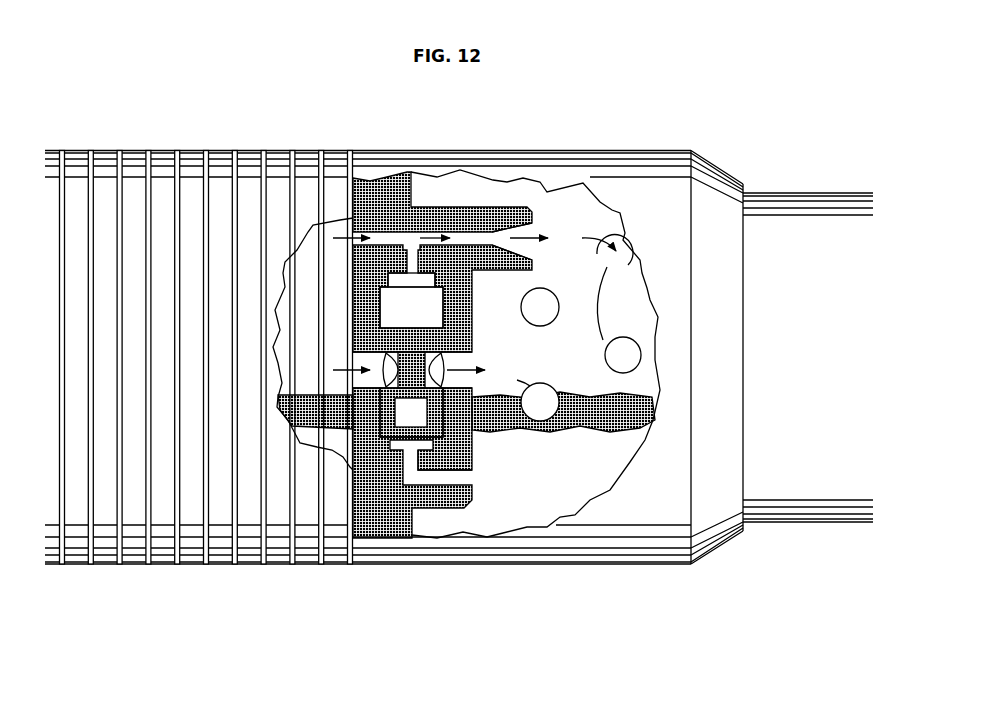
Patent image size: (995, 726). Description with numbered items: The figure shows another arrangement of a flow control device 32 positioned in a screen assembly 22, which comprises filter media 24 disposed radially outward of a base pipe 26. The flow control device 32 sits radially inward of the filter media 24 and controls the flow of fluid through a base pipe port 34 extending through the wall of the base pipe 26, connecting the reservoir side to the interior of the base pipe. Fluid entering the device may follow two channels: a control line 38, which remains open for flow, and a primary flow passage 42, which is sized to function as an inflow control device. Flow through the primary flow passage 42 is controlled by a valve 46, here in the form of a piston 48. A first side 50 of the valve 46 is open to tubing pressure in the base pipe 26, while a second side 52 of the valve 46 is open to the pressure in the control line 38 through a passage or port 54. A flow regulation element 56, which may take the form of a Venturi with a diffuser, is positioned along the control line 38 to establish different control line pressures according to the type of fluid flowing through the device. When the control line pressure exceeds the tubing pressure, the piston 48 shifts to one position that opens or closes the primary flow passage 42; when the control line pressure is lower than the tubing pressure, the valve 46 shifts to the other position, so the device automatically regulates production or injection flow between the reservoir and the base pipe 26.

The screen assembly 22 is at (173, 129).
The filter media 24 is at (141, 367).
The base pipe 26 is at (811, 367).
The flow control device 32 is at (466, 358).
The base pipe port 34 is at (559, 305).
The control line 38 is at (383, 227).
The primary flow passage 42 is at (367, 349).
The valve 46 is at (452, 440).
The piston 48 is at (402, 423).
The first side 50 is at (394, 452).
The second side 52 is at (392, 319).
The passage or port 54 is at (407, 257).
The flow regulation element 56 is at (510, 223).